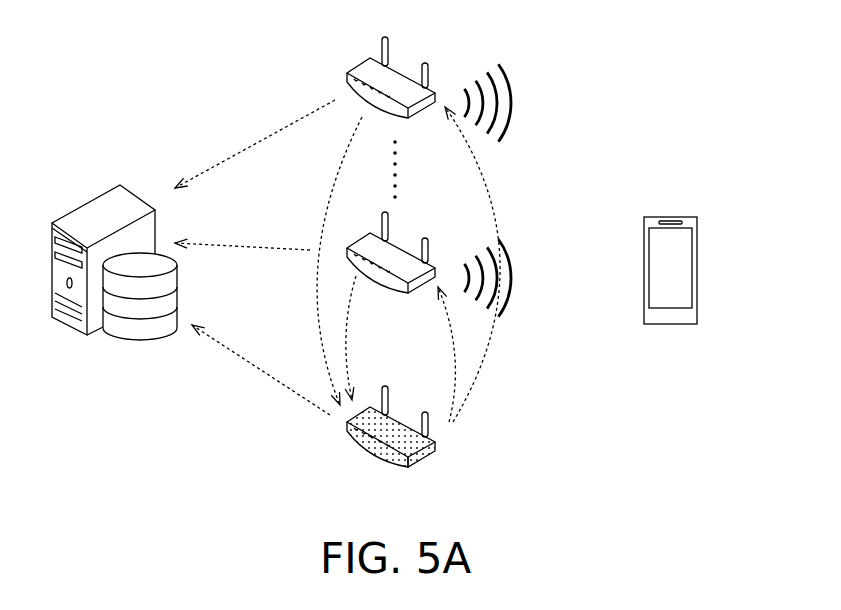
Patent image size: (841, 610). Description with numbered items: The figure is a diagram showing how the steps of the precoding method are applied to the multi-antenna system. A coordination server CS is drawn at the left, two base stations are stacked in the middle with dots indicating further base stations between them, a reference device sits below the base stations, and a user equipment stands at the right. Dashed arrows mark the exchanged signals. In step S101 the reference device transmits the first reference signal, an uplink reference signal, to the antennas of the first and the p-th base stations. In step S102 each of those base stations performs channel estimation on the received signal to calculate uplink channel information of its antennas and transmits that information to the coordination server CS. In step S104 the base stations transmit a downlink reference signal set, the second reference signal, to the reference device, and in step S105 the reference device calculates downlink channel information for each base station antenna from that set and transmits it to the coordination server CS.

The coordination server CS is at (87, 203).
The step of transmitting first reference signal S101 is at (463, 265).
The step of calculating and transmitting uplink channel information S102 is at (255, 175).
The step of transmitting second reference signal S104 is at (334, 261).
The step of calculating and transmitting downlink channel information S105 is at (261, 370).